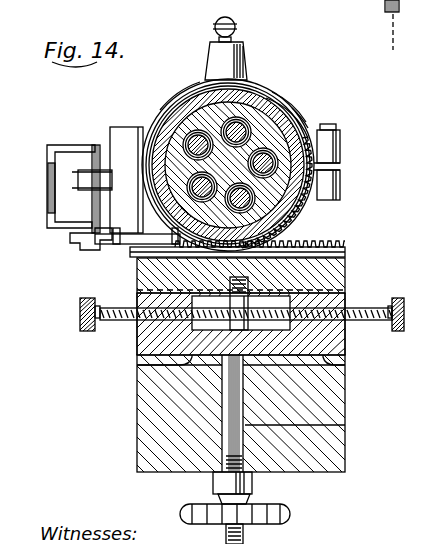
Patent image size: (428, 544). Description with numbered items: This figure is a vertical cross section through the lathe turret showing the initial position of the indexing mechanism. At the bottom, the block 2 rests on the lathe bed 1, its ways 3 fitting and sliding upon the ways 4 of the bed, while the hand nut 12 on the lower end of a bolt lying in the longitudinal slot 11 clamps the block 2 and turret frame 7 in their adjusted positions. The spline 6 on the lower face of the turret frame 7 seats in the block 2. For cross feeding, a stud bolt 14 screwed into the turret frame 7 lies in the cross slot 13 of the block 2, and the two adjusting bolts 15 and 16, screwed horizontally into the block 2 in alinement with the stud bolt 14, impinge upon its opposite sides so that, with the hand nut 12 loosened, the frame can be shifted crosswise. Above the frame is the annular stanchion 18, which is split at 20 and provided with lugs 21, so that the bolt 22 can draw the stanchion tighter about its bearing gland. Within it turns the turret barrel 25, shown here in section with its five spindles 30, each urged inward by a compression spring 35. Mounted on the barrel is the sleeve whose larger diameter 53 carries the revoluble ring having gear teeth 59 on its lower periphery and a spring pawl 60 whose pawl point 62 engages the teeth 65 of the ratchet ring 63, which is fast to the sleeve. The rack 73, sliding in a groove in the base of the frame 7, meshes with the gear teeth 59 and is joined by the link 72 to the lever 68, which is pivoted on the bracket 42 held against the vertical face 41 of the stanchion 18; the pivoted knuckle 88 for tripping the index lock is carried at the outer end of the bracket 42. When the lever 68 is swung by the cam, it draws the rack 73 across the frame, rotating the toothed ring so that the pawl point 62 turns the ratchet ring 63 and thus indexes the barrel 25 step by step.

The lathe bed 1 is at (345, 399).
The block 2 is at (137, 343).
The ways 3 is at (137, 359).
The ways of the lathe bed 4 is at (97, 142).
The spline 6 is at (345, 291).
The turret frame 7 is at (345, 268).
The longitudinal slot 11 is at (345, 432).
The hand nut 12 is at (290, 514).
The cross slot 13 is at (345, 326).
The stud bolt 14 is at (230, 304).
The adjusting bolt 15 is at (118, 308).
The adjusting bolt 16 is at (404, 310).
The annular stanchion 18 is at (269, 90).
The split 20 is at (332, 166).
The lug 21 is at (340, 143).
The bolt 22 is at (323, 127).
The turret barrel 25 is at (300, 112).
The spindle 30 is at (195, 190).
The compression spring 35 is at (185, 210).
The vertical face 41 is at (137, 134).
The bracket 42 is at (126, 180).
The larger diameter of sleeve 53 is at (270, 100).
The gear teeth 59 is at (303, 205).
The spring pawl 60 is at (185, 102).
The pawl point 62 is at (246, 80).
The ratchet ring 63 is at (276, 112).
The ratchet teeth 65 is at (305, 120).
The lever 68 is at (70, 240).
The link 72 is at (100, 244).
The rack 73 is at (345, 247).
The knuckle 88 is at (47, 185).